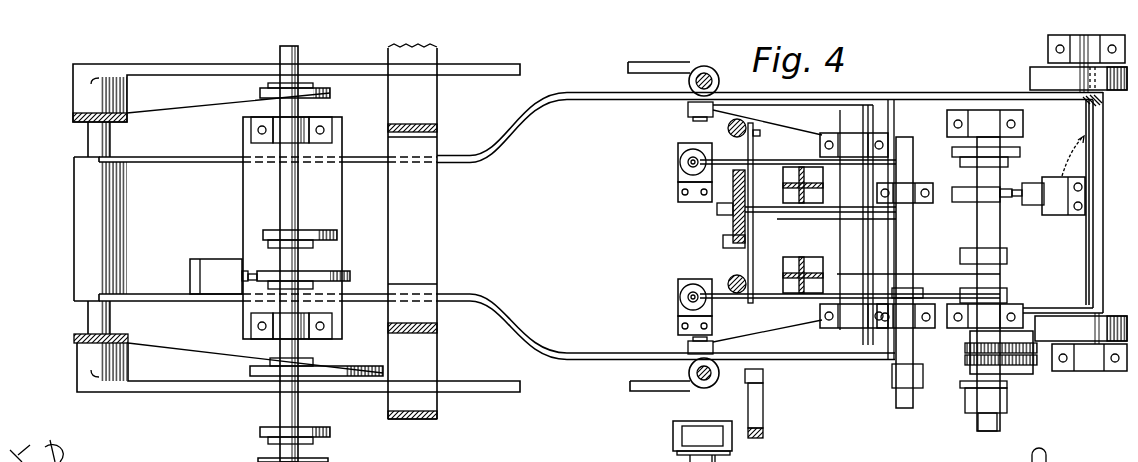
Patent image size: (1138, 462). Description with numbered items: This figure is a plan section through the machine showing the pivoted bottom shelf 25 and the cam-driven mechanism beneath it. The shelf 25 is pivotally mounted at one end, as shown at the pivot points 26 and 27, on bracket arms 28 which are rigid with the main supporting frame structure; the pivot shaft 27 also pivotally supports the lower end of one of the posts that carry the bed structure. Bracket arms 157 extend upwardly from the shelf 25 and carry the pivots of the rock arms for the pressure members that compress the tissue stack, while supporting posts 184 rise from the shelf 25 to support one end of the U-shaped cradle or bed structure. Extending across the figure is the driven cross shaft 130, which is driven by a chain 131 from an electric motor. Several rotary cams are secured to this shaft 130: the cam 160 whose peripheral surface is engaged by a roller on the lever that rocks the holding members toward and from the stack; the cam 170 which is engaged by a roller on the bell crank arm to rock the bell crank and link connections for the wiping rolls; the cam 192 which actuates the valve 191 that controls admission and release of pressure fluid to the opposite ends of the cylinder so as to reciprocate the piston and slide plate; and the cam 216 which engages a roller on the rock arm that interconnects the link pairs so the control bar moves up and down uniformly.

The bottom shelf 25 is at (605, 358).
The pivot mounting 26 is at (90, 284).
The pivot shaft 27 is at (99, 316).
The bracket arms 28 is at (214, 50).
The cross shaft 130 is at (290, 405).
The chain 131 is at (403, 450).
The bracket arms 157 is at (408, 420).
The rotary cam 160 is at (383, 368).
The rotary cam 170 is at (331, 95).
The supporting posts 184 is at (437, 126).
The valve 191 is at (236, 236).
The rotary cam 192 is at (350, 277).
The rotary cam 216 is at (330, 232).